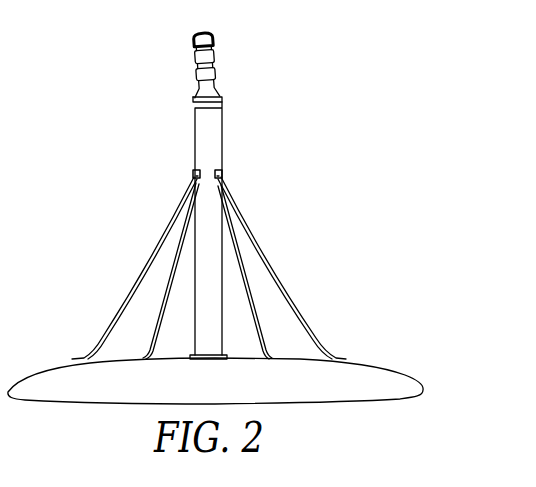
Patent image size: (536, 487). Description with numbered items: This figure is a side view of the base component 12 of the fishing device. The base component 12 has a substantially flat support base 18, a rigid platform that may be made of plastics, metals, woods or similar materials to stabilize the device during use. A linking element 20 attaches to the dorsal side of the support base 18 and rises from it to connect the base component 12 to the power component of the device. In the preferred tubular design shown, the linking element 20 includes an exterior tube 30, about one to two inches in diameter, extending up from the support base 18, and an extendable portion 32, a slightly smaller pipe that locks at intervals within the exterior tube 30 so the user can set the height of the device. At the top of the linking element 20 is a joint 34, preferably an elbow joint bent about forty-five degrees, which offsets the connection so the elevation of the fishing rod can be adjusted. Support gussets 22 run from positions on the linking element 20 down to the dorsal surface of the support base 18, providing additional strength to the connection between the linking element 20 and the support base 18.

The base component 12 is at (103, 106).
The support base 18 is at (383, 366).
The linking element 20 is at (194, 123).
The support gussets 22 is at (172, 278).
The exterior tube 30 is at (204, 155).
The extendable portion 32 is at (197, 76).
The joint 34 is at (217, 60).